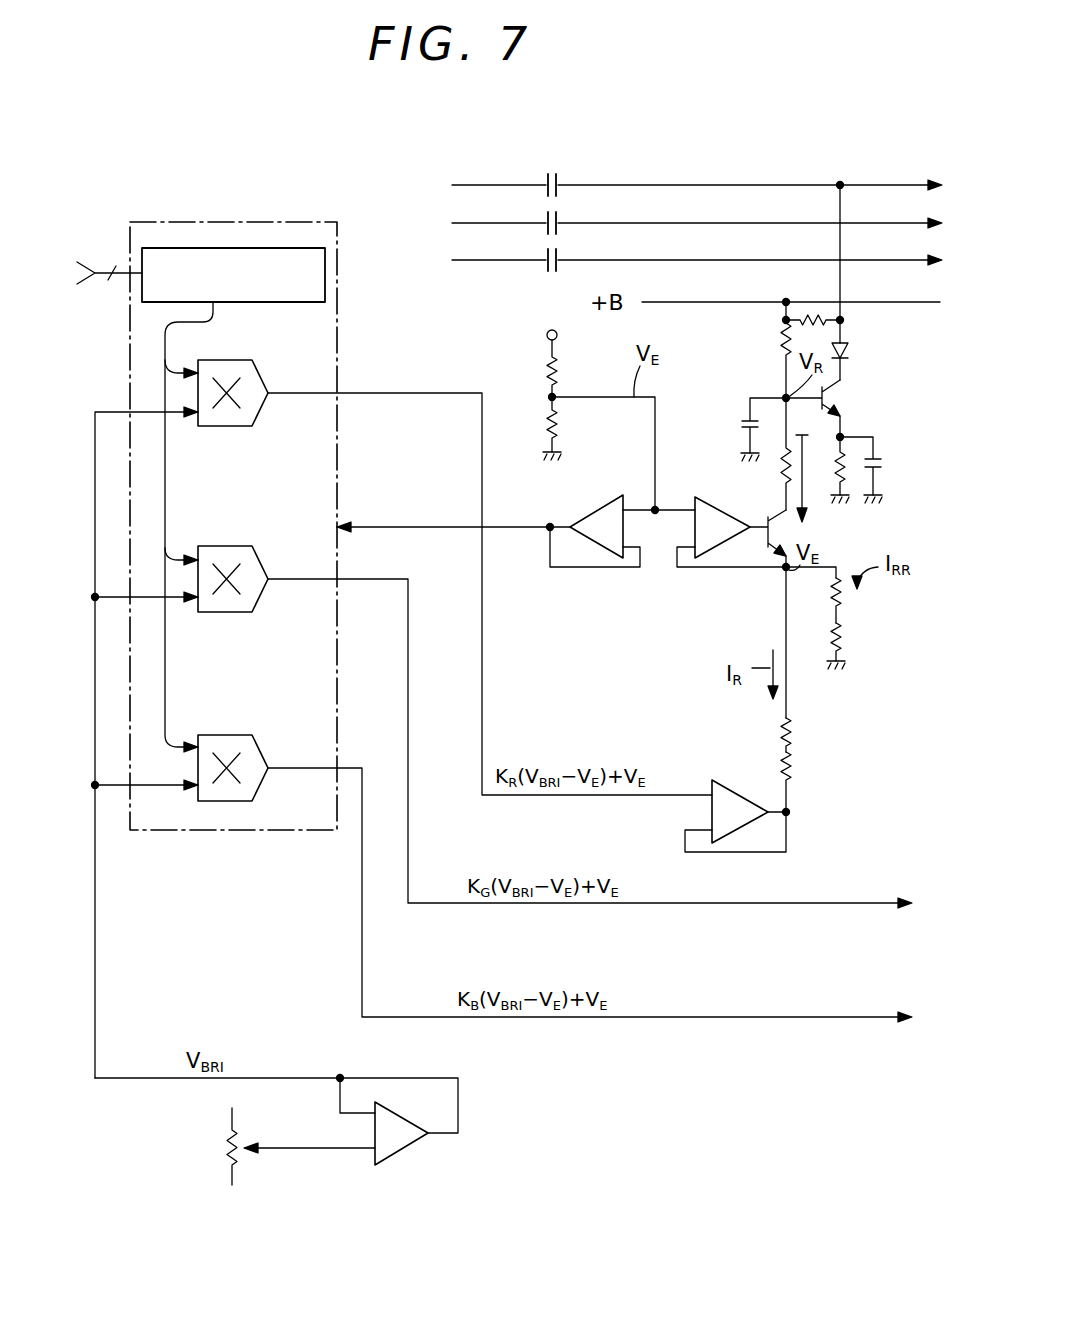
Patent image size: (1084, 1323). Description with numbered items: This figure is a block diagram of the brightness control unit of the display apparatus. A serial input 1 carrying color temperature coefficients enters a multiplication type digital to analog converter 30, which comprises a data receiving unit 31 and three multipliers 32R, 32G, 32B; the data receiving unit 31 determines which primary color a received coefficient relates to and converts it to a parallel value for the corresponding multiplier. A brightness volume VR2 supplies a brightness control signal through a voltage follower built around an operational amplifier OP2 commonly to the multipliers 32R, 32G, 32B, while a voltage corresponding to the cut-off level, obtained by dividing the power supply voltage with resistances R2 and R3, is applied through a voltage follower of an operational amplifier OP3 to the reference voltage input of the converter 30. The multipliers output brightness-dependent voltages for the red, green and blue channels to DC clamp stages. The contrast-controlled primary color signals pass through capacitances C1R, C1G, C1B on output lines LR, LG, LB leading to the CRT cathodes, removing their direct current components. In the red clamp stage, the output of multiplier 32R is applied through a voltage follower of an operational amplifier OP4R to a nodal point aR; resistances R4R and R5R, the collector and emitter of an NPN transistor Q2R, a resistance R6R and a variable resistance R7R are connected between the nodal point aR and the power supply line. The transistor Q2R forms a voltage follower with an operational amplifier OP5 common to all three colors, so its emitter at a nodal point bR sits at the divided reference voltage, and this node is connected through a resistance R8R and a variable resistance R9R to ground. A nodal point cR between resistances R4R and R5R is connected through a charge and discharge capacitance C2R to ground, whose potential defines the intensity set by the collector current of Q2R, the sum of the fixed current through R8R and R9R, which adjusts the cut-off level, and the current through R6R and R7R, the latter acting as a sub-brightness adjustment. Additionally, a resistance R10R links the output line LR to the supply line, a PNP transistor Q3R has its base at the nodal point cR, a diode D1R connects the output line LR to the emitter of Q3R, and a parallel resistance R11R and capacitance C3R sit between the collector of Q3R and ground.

The input signal 1 is at (109, 266).
The multiplication type digital to analog converter 30 is at (186, 214).
The data receiving unit 31 is at (325, 275).
The multiplier 32R is at (256, 373).
The multiplier 32G is at (242, 548).
The multiplier 32B is at (240, 737).
The output line LR is at (754, 185).
The output line LG is at (697, 223).
The output line LB is at (880, 260).
The capacitance C1R is at (560, 177).
The capacitance C1G is at (560, 218).
The capacitance C1B is at (560, 256).
The resistance R10R is at (806, 316).
The resistance R4R is at (781, 349).
The diode D1R is at (850, 353).
The nodal point cR is at (784, 395).
The charge and discharge capacitance C2R is at (746, 420).
The PNP transistor Q3R is at (846, 392).
The resistance R11R is at (846, 468).
The capacitance C3R is at (879, 472).
The resistance R5R is at (781, 481).
The NPN transistor Q2R is at (803, 538).
The resistance R2 is at (558, 364).
The resistance R3 is at (558, 422).
The operational amplifier OP3 is at (573, 521).
The operational amplifier OP5 is at (690, 532).
The nodal point bR is at (784, 570).
The resistance R8R is at (846, 594).
The variable resistance R9R is at (846, 639).
The resistance R6R is at (791, 730).
The variable resistance R7R is at (791, 770).
The nodal point aR is at (790, 812).
The operational amplifier OP4R is at (790, 852).
The operational amplifier OP2 is at (401, 1152).
The brightness volume VR2 is at (240, 1165).